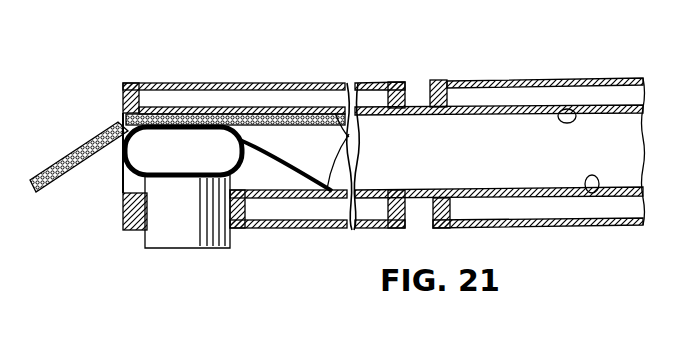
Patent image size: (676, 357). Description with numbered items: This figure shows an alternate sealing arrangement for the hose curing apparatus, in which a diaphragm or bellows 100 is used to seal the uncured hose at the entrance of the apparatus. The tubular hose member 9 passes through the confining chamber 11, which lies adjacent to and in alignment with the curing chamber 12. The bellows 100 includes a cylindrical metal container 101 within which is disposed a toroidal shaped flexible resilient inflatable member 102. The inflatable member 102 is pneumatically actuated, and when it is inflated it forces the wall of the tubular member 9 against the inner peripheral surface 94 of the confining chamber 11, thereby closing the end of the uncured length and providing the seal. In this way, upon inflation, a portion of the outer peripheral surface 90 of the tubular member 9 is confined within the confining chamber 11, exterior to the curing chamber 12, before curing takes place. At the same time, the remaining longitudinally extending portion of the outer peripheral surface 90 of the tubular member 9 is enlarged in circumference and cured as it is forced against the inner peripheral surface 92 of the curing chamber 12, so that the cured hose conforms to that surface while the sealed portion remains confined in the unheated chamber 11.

The tubular hose member 9 is at (404, 115).
The confining chamber 11 is at (195, 83).
The curing chamber 12 is at (507, 79).
The outer peripheral surface 90 is at (527, 113).
The inner peripheral surface 92 is at (576, 112).
The inner peripheral surface 94 is at (302, 118).
The diaphragm or bellows 100 is at (140, 185).
The cylindrical metal container 101 is at (155, 232).
The toroidal flexible resilient inflatable member 102 is at (122, 158).